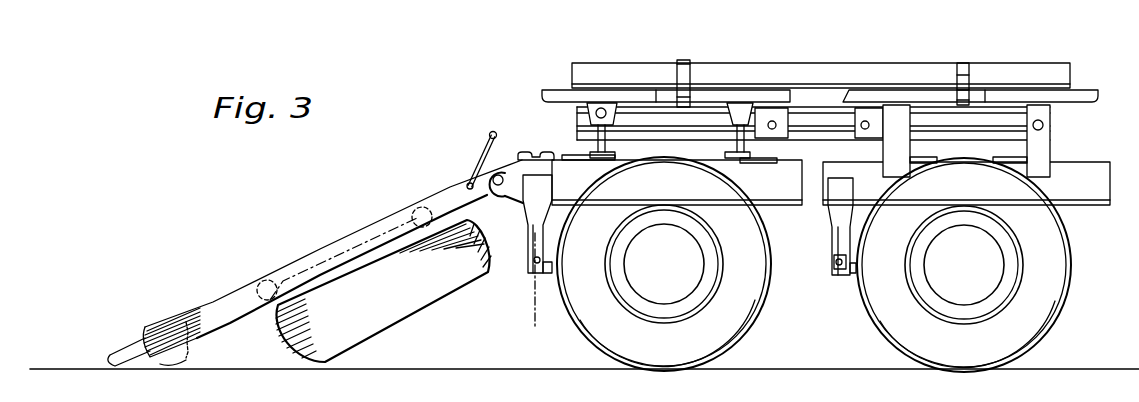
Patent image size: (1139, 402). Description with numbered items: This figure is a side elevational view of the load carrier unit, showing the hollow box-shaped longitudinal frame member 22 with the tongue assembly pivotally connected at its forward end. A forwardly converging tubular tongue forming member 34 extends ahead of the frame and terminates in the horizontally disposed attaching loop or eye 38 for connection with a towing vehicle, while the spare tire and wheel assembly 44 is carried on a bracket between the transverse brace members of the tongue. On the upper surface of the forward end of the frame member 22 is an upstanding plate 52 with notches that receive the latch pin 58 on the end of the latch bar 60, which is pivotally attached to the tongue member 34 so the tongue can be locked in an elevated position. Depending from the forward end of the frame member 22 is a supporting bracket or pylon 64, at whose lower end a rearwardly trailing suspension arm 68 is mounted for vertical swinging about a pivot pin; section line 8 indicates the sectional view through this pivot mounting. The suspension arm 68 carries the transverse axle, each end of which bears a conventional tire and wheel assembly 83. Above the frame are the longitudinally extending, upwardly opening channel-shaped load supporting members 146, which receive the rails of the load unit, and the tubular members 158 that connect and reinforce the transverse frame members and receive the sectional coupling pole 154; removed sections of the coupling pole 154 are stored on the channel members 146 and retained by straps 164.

The longitudinal frame member 22 is at (1098, 188).
The tongue forming member 34 is at (213, 300).
The attaching loop or eye 38 is at (125, 352).
The spare tire and wheel assembly 44 is at (283, 339).
The upstanding plate 52 is at (531, 152).
The latch pin 58 is at (493, 132).
The latch bar 60 is at (491, 158).
The depending supporting bracket or pylon 64 is at (832, 237).
The suspension arm 68 is at (845, 268).
The section line 8- 8 is at (524, 235).
The tire and wheel assembly 83 is at (672, 337).
The channel-shaped load supporting member 146 is at (1083, 95).
The coupling pole 154 is at (848, 60).
The tubular member 158 is at (702, 118).
The strap 164 is at (684, 62).